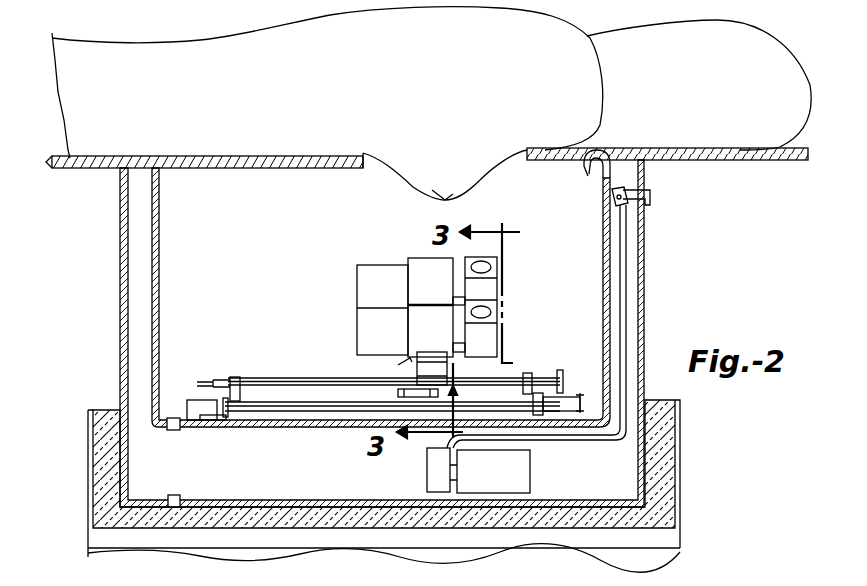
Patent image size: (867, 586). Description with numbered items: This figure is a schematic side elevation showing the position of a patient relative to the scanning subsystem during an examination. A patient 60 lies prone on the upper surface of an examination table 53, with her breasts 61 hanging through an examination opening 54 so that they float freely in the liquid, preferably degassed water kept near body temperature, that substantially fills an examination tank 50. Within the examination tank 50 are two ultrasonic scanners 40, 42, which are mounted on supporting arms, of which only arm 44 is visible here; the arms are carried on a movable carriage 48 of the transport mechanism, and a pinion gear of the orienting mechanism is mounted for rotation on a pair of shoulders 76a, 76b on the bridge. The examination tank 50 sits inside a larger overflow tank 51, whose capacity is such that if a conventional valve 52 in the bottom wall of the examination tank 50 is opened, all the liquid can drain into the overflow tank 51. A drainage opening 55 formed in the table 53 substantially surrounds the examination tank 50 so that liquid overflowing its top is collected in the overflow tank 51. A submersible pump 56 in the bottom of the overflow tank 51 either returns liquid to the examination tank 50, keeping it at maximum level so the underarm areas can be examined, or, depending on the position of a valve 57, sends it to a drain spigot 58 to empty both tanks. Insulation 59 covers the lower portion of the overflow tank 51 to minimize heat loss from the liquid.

The scanner 40 is at (397, 303).
The scanner 42 is at (357, 331).
The supporting arm 44 is at (410, 362).
The movable carriage 48 is at (403, 390).
The examination tank 50 is at (159, 267).
The overflow tank 51 is at (120, 222).
The valve 52 is at (170, 431).
The examination table 53 is at (791, 160).
The examination opening 54 is at (365, 166).
The drainage opening 55 is at (140, 157).
The submersible pump 56 is at (530, 477).
The valve 57 is at (628, 202).
The drain spigot 58 is at (650, 192).
The insulation 59 is at (100, 468).
The patient 60 is at (238, 30).
The breasts 61 is at (428, 191).
The shoulder 76a is at (518, 351).
The shoulder 76b is at (241, 349).